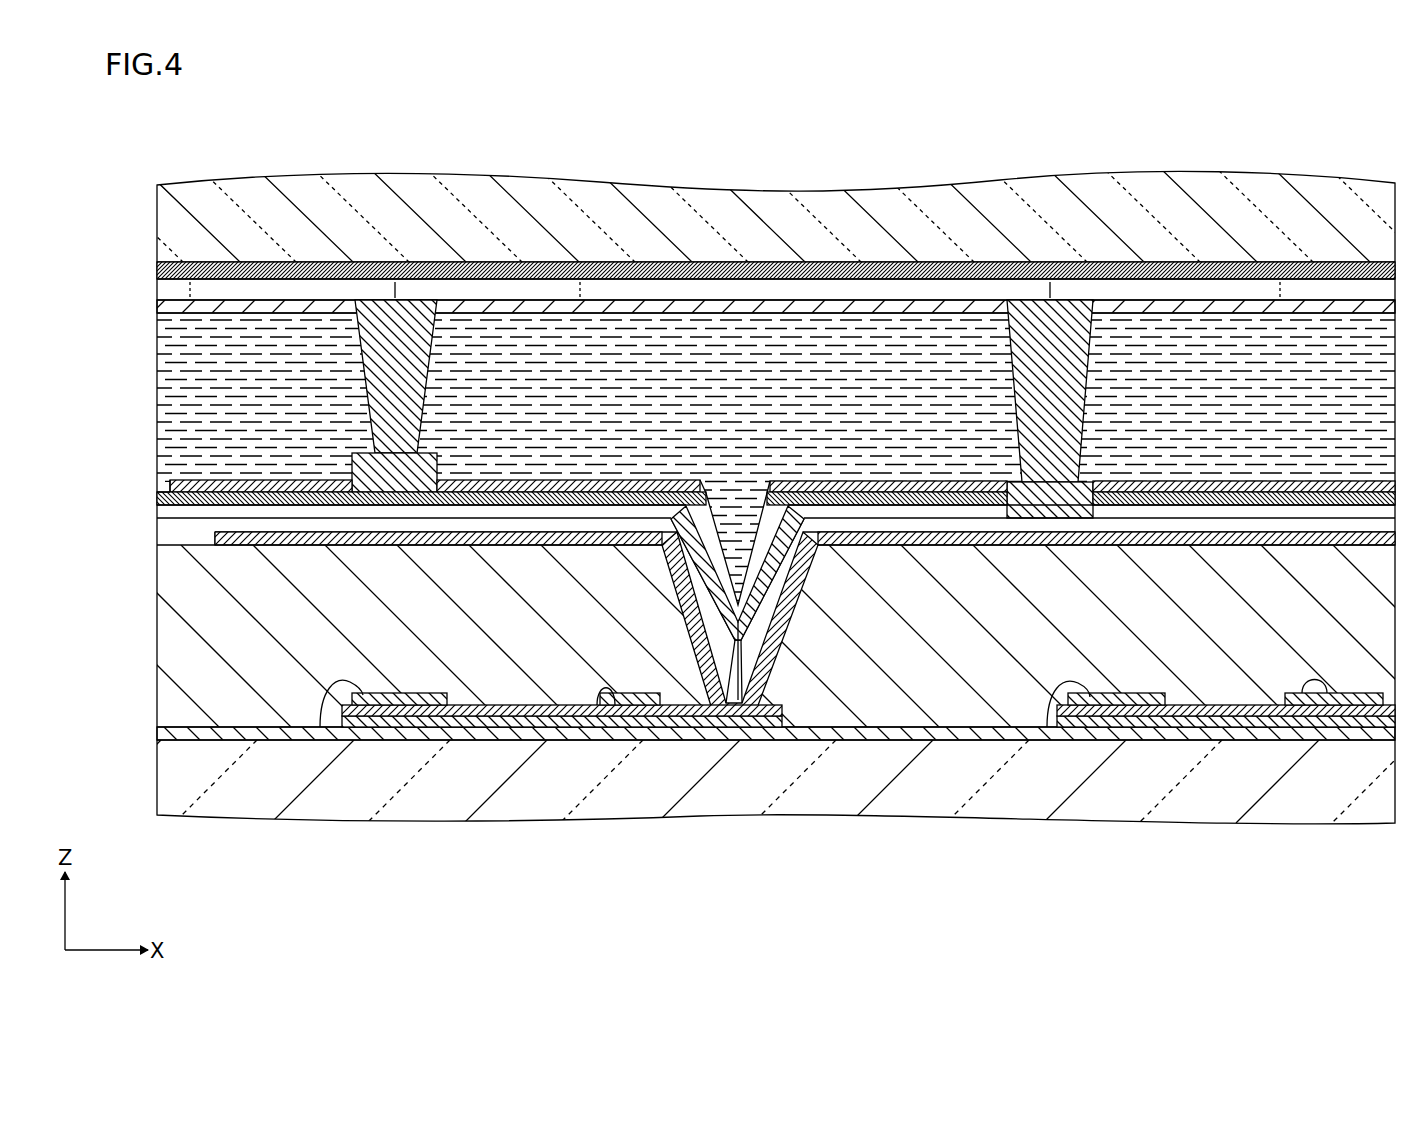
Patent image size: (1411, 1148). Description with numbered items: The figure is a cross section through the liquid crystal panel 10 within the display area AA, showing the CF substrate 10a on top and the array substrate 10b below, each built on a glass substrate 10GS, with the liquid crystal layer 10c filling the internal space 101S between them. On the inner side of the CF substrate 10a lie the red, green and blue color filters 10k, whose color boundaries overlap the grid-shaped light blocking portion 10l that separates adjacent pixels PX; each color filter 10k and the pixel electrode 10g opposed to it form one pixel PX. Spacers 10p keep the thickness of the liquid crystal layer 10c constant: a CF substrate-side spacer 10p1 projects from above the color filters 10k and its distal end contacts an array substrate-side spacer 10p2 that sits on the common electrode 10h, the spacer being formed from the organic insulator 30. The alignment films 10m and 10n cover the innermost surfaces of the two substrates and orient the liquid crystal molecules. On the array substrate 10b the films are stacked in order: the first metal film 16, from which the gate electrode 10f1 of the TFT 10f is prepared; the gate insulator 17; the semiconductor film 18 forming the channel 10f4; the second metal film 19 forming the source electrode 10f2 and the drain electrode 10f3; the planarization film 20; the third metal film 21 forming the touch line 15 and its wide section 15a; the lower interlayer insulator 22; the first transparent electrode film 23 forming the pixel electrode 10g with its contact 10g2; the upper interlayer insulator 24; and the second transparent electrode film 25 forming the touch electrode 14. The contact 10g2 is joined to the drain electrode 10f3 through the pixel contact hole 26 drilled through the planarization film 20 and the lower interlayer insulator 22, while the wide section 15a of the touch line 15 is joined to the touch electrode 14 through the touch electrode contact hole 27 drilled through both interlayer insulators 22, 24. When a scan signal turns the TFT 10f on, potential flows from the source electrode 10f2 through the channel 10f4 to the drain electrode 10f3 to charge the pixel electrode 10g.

The liquid crystal panel 10 is at (1370, 205).
The glass substrate 10GS is at (815, 225).
The CF substrate 10a is at (540, 200).
The color filters 10k is at (190, 290).
The light blocking portion 10l is at (300, 305).
The alignment film 10m is at (667, 307).
The alignment film 10n is at (669, 492).
The liquid crystal layer 10c is at (752, 340).
The CF substrate-side spacer 10p1 is at (385, 350).
The array substrate-side spacer 10p2 is at (790, 271).
The spacers 10p is at (715, 300).
The organic insulator 30 is at (724, 391).
The touch electrode 14 is at (480, 290).
The common electrode 10h is at (394, 472).
The second transparent electrode film 25 is at (394, 472).
The touch line 15 is at (782, 497).
The wide section 15a is at (1110, 500).
The third metal film 21 is at (1170, 515).
The array substrate 10b is at (690, 780).
The gate insulator 17 is at (440, 730).
The TFT 10f is at (842, 805).
The gate electrode 10f1 is at (868, 823).
The first metal film 16 is at (500, 720).
The source electrode 10f2 is at (727, 791).
The second metal film 19 is at (345, 690).
The drain electrode 10f3 is at (605, 700).
The channel 10f4 is at (868, 806).
The semiconductor film 18 is at (560, 703).
The contact 10g2 is at (737, 708).
The pixel electrode 10g is at (737, 573).
The first transparent electrode film 23 is at (737, 573).
The lower interlayer insulator 22 is at (888, 520).
The upper interlayer insulator 24 is at (833, 520).
The pixel contact hole 26 is at (768, 600).
The planarization film 20 is at (925, 665).
The touch electrode contact hole 27 is at (992, 482).
The internal space 101S is at (870, 335).
The pixel PX is at (240, 272).
The display area AA is at (968, 148).